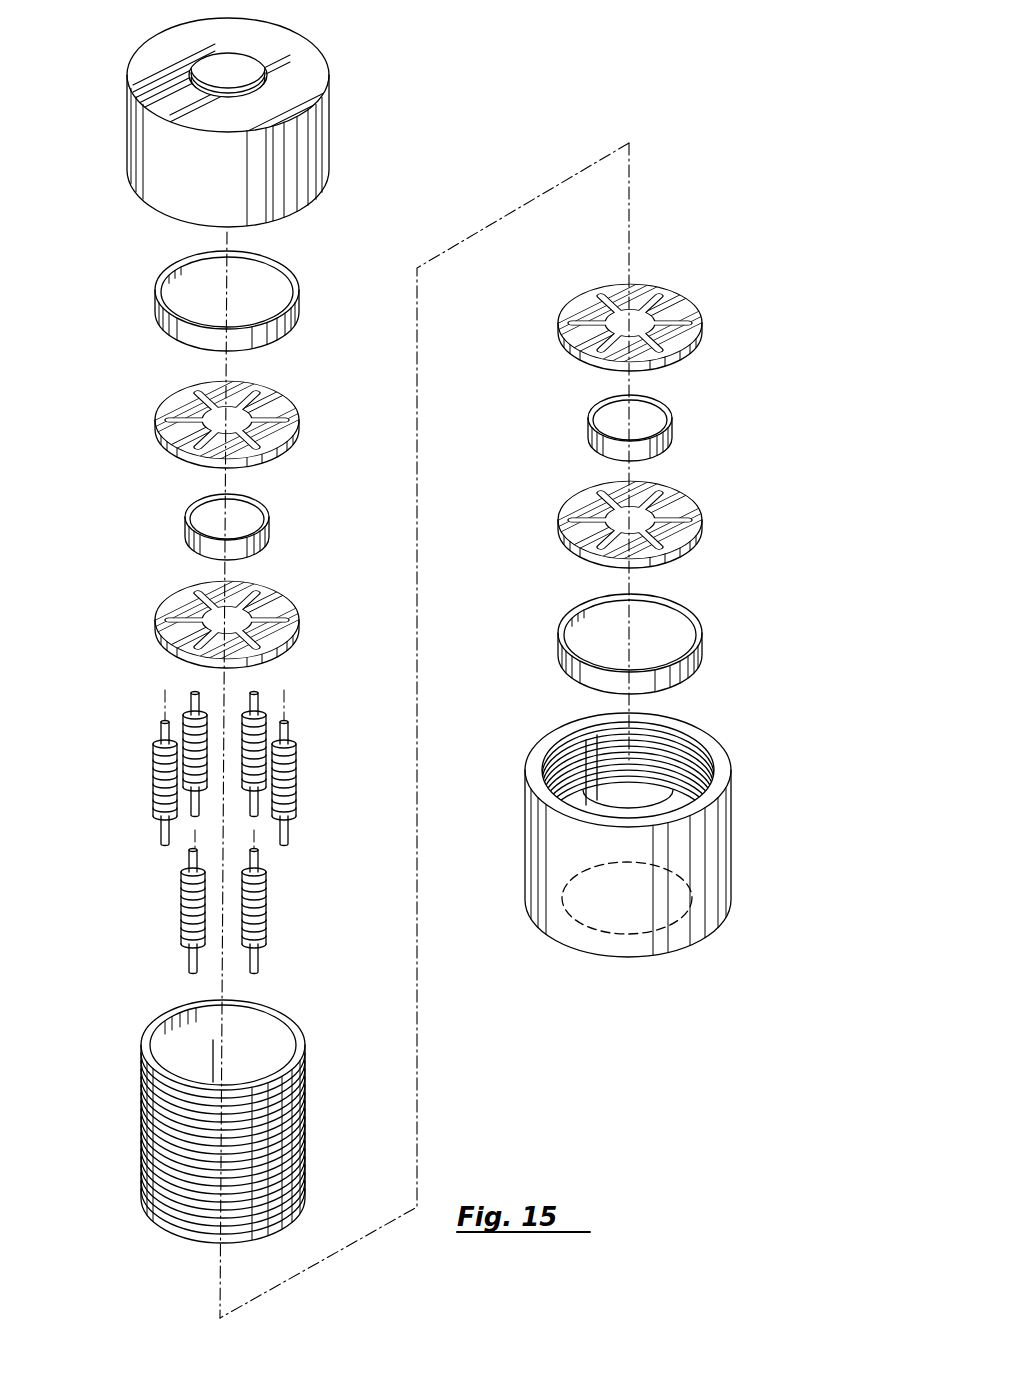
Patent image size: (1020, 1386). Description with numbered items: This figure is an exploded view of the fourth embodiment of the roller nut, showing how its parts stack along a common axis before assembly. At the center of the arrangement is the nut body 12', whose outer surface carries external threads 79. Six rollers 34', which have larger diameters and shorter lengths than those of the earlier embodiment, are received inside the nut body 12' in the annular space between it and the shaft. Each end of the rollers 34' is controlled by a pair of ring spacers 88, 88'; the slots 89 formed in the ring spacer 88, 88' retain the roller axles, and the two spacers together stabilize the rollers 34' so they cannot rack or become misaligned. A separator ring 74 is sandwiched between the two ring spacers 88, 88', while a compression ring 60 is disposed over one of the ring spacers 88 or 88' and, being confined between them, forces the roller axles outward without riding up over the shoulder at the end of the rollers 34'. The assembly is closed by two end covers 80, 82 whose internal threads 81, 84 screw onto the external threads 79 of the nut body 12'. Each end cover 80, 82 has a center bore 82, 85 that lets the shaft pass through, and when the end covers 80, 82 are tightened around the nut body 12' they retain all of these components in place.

The nut body 12' is at (193, 1119).
The rollers 34' is at (214, 832).
The compression ring 60 is at (188, 515).
The separator ring 74 is at (170, 275).
The external threads 79 is at (295, 1100).
The end cover 80 is at (315, 150).
The internal threads 81 is at (245, 88).
The end cover / center bore 82 is at (535, 817).
The internal threads 84 is at (667, 747).
The center bore 85 is at (613, 908).
The ring spacer 88 is at (430, 371).
The ring spacer 88' is at (434, 569).
The slots 89 is at (283, 422).